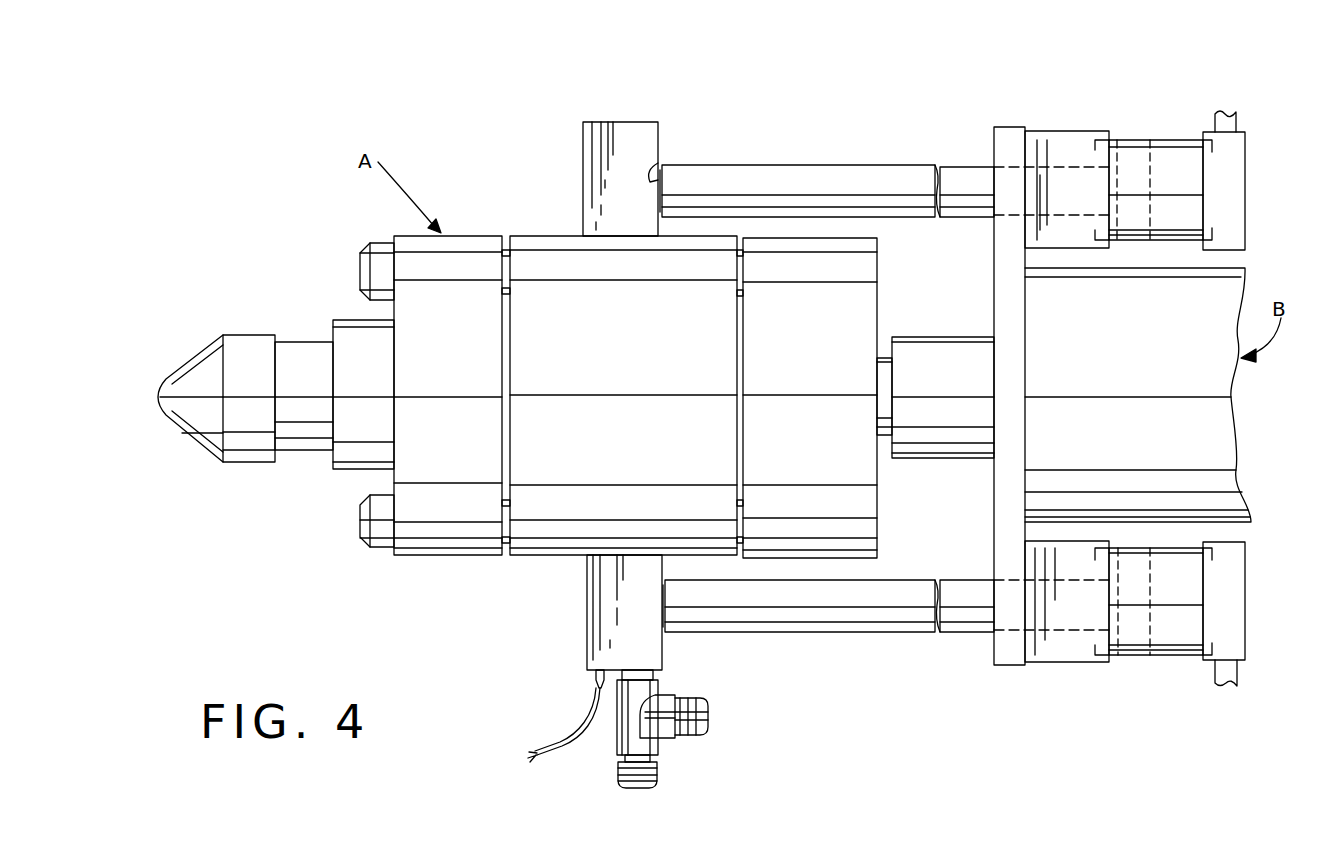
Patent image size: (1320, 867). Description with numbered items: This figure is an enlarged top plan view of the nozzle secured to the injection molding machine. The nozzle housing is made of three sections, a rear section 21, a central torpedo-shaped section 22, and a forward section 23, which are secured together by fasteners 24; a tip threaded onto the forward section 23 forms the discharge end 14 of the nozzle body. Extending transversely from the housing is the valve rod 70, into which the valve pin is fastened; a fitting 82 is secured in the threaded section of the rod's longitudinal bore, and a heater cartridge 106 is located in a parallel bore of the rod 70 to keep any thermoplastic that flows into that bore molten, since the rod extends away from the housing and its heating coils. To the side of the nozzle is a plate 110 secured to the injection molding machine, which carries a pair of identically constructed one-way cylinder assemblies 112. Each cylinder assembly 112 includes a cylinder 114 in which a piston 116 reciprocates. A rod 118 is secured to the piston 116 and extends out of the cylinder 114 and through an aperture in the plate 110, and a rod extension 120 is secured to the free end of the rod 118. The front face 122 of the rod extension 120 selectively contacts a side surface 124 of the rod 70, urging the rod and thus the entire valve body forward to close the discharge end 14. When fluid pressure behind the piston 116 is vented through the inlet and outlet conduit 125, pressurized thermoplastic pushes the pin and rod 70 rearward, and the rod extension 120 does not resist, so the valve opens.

The discharge end 14 is at (246, 446).
The rear section 21 is at (848, 512).
The central torpedo-shaped section 22 is at (541, 535).
The forward section 23 is at (451, 535).
The fasteners 24 is at (376, 531).
The rod 70 is at (684, 368).
The fitting 82 is at (660, 748).
The heater cartridge 106 is at (592, 676).
The plate 110 is at (994, 648).
The cylinder assemblies 112 is at (1047, 131).
The cylinder 114 is at (1118, 142).
The piston 116 is at (1136, 160).
The rod 118 is at (973, 183).
The rod extension 120 is at (776, 184).
The front face 122 is at (657, 165).
The side surface 124 is at (660, 122).
The inlet and outlet conduit 125 is at (1229, 126).